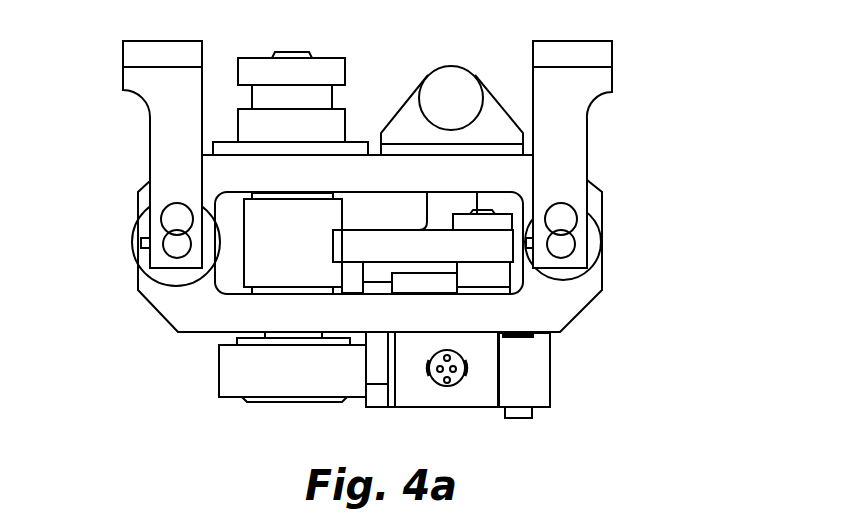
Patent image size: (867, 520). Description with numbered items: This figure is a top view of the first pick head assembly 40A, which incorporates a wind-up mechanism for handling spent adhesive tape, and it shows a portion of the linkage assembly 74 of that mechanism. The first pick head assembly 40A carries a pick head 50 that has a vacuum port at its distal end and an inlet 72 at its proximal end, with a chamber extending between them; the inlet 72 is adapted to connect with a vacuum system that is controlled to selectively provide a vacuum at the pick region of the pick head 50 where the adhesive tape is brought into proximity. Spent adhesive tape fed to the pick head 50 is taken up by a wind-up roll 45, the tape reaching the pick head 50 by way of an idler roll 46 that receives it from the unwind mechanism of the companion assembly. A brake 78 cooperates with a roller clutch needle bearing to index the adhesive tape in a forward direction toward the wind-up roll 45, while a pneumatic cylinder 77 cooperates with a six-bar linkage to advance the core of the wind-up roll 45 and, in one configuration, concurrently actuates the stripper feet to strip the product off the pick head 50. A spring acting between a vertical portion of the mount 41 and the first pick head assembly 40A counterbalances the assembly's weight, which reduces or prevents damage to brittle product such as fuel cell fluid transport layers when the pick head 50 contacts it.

The first pick head assembly 40A is at (628, 110).
The mount 41 is at (124, 77).
The wind-up roll 45 is at (228, 372).
The idler roll 46 is at (540, 378).
The pick head 50 is at (412, 397).
The inlet 72 is at (463, 378).
The linkage assembly 74 is at (382, 212).
The pneumatic cylinder 77 is at (448, 68).
The brake 78 is at (327, 60).